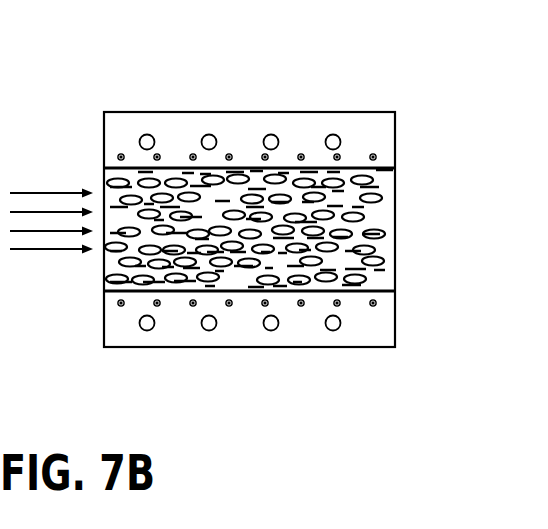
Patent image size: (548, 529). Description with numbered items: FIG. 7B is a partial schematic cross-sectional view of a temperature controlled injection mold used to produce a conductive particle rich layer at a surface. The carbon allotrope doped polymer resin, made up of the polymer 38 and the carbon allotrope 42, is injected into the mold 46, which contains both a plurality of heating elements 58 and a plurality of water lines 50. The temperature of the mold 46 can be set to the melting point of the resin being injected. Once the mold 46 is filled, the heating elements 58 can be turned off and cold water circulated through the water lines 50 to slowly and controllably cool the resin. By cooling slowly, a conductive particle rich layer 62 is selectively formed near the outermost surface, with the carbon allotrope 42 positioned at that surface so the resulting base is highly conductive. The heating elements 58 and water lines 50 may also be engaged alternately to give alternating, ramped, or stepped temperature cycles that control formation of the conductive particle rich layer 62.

The carbon allotrope 42 is at (396, 218).
The conductive particle rich layer 62 is at (404, 163).
The mold 46 is at (183, 140).
The water lines 50 is at (327, 136).
The heating elements 58 is at (262, 152).
The polymer 38 is at (392, 183).